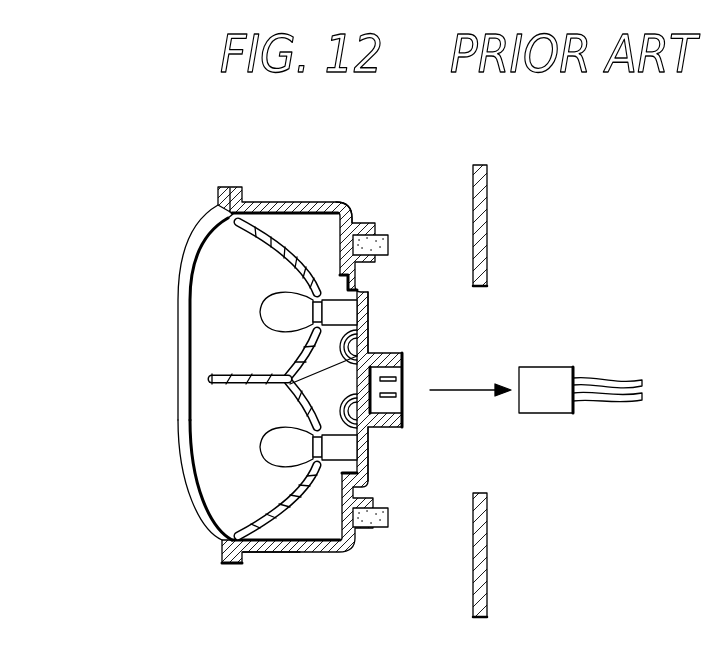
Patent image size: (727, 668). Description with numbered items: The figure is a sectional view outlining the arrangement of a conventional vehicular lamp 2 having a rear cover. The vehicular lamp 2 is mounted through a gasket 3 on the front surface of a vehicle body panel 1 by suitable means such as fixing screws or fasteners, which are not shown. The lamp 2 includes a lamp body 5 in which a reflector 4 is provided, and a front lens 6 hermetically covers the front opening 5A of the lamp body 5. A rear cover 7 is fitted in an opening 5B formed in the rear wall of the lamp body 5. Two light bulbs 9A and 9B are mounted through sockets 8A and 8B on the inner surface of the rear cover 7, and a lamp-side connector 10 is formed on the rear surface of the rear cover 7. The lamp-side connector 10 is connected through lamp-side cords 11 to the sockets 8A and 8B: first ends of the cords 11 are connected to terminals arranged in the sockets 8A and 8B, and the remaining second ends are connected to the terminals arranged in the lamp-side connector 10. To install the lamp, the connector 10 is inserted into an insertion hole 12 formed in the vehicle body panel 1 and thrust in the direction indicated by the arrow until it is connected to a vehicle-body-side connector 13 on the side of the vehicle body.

The vehicle body panel 1 is at (481, 226).
The vehicular lamp 2 is at (266, 147).
The gasket 3 is at (382, 234).
The reflector 4 is at (258, 553).
The lamp body 5 is at (298, 553).
The front opening 5A is at (227, 218).
The opening 5B is at (340, 278).
The front lens 6 is at (203, 527).
The rear cover 7 is at (370, 333).
The socket 8A is at (350, 312).
The socket 8B is at (350, 451).
The light bulb 9A is at (260, 309).
The light bulb 9B is at (260, 450).
The lamp-side connector 10 is at (403, 361).
The lamp-side cords 11 is at (298, 390).
The insertion hole 12 is at (481, 493).
The vehicle-body-side connector 13 is at (556, 372).